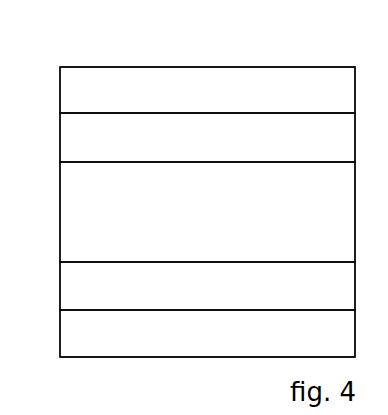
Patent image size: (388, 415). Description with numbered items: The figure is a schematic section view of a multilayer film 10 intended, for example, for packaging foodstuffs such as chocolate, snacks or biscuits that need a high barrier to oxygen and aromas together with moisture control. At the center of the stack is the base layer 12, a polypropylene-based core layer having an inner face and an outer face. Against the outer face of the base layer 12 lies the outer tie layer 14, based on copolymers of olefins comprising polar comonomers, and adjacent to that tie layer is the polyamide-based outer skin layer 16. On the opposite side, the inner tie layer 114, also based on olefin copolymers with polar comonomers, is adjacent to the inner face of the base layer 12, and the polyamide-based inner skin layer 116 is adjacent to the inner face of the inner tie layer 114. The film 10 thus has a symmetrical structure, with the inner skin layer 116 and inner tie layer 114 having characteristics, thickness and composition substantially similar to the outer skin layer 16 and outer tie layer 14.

The multilayer film 10 is at (47, 72).
The base layer 12 is at (220, 223).
The outer tie layer 14 is at (220, 146).
The outer skin layer 16 is at (220, 100).
The inner tie layer 114 is at (226, 296).
The inner skin layer 116 is at (226, 343).